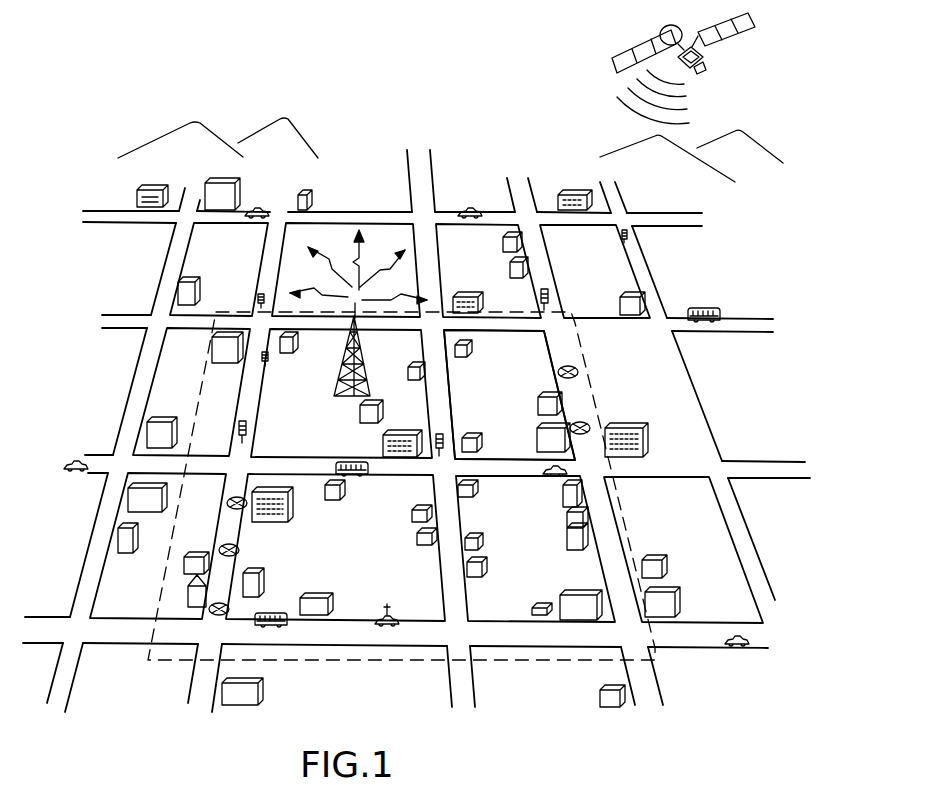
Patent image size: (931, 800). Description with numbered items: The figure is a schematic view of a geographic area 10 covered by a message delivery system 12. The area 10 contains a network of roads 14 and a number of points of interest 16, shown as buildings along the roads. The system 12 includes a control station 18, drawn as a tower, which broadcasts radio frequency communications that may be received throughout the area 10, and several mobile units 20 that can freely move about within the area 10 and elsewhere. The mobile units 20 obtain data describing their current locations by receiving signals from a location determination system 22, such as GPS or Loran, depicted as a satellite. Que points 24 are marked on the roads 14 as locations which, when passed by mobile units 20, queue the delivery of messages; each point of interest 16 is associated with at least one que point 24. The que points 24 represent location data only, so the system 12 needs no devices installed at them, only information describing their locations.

The geographic area 10 is at (490, 661).
The message delivery system 12 is at (348, 428).
The network of roads 14 is at (562, 340).
The points of interest 16 is at (536, 408).
The control station 18 is at (365, 351).
The mobile units 20 is at (353, 478).
The location determination system 22 is at (708, 62).
The que points 24 is at (233, 496).